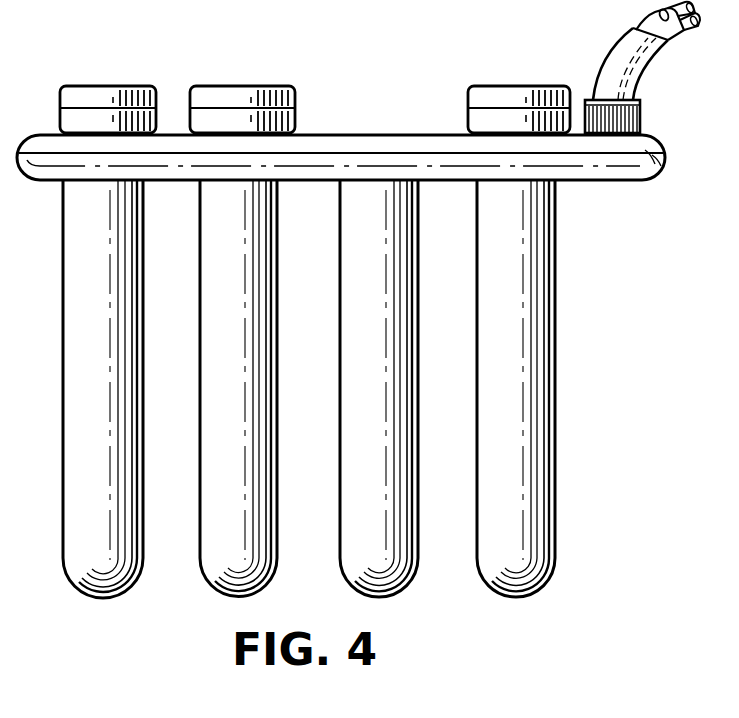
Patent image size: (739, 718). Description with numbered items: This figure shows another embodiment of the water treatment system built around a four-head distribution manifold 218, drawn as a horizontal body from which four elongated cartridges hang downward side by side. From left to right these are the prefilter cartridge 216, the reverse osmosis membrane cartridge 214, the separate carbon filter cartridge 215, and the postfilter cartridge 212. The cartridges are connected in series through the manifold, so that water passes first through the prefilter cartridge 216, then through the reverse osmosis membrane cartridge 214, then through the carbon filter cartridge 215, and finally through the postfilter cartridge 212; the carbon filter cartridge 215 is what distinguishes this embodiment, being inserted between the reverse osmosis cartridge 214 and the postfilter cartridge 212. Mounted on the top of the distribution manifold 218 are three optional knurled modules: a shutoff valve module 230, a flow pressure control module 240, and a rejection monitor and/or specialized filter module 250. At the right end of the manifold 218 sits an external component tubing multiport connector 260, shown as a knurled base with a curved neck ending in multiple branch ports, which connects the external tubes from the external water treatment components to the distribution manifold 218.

The postfilter cartridge 212 is at (532, 337).
The reverse osmosis membrane cartridge 214 is at (257, 434).
The carbon filter cartridge 215 is at (417, 394).
The prefilter cartridge 216 is at (115, 453).
The distribution manifold 218 is at (646, 178).
The shutoff valve module 230 is at (108, 97).
The flow pressure control module 240 is at (246, 97).
The rejection monitor and/or specialized filter module 250 is at (505, 97).
The external component tubing multiport connector 260 is at (590, 68).